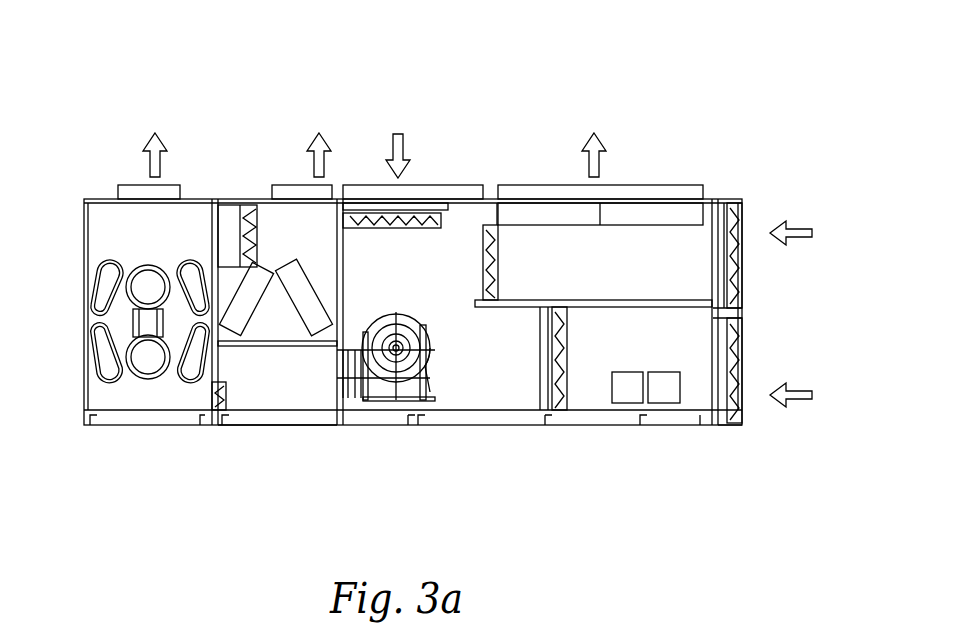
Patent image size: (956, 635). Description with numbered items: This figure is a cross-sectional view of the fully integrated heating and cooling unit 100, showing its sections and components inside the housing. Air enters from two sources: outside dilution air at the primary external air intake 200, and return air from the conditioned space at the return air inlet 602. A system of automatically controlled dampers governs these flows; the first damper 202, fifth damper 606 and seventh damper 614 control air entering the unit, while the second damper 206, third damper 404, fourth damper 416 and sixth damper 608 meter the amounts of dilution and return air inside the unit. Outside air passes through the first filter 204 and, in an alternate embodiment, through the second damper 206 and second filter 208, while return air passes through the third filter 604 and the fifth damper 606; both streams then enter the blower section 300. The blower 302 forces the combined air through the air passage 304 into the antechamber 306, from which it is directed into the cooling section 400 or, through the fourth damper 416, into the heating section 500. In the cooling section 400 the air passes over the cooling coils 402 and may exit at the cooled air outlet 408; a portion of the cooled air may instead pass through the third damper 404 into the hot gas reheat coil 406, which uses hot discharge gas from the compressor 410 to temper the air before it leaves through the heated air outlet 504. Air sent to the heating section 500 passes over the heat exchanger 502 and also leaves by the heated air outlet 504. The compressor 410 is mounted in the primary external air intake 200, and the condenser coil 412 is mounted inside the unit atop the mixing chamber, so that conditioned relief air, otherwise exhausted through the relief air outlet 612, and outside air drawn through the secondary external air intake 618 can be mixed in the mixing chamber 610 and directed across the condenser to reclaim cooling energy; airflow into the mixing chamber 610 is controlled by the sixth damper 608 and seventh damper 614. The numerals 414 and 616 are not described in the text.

The heating and cooling unit 100 is at (99, 57).
The primary external air intake 200 is at (702, 420).
The first damper 202 is at (745, 372).
The first filter 204 is at (745, 410).
The second damper 206 is at (572, 395).
The second filter 208 is at (542, 410).
The blower section 300 is at (513, 412).
The blower 302 is at (436, 378).
The air passage 304 is at (332, 392).
The antechamber 306 is at (288, 412).
The cooling section 400 is at (340, 196).
The cooling coils 402 is at (262, 272).
The third damper 404 is at (246, 205).
The hot gas reheat coil 406 is at (218, 203).
The cooled air outlet 408 is at (332, 198).
The compressor 410 is at (662, 405).
The condenser coil 412 is at (604, 198).
The relief air outlet 414 is at (648, 192).
The fourth damper 416 is at (226, 405).
The heating section 500 is at (146, 411).
The heat exchanger 502 is at (88, 300).
The heated air outlet 504 is at (118, 188).
The return air inlet 602 is at (452, 190).
The third filter 604 is at (409, 199).
The fifth damper 606 is at (442, 222).
The sixth damper 608 is at (498, 250).
The mixing chamber 610 is at (713, 200).
The relief air outlet 612 is at (690, 190).
The seventh damper 614 is at (745, 290).
The upper outside air opening 616 is at (742, 236).
The secondary external air intake 618 is at (742, 216).